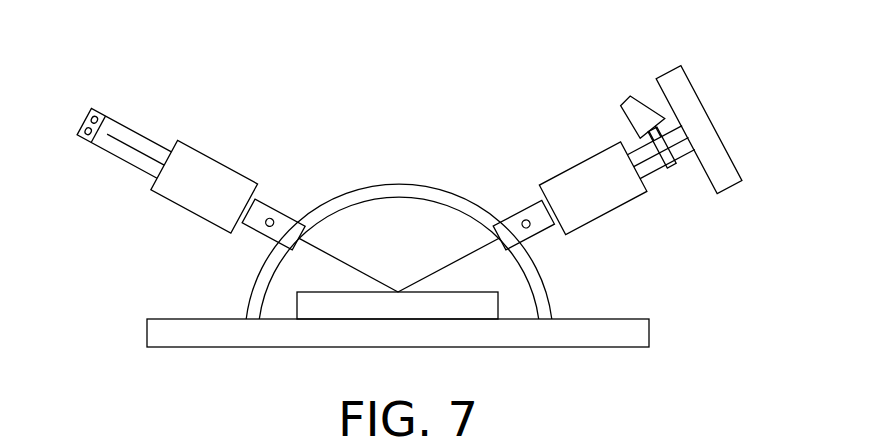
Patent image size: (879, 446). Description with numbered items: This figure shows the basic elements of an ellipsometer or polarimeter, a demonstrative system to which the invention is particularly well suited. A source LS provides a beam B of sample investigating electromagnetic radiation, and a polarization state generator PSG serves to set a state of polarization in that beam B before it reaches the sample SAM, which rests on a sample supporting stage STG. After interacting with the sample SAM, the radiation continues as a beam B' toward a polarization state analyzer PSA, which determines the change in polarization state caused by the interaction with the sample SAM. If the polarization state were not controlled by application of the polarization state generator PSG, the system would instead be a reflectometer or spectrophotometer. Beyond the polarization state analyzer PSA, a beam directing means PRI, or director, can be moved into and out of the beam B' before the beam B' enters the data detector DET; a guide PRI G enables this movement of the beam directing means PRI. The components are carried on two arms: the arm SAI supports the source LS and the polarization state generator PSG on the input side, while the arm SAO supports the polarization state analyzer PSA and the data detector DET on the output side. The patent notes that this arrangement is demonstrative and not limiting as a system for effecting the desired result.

The source LS is at (103, 105).
The beam B is at (252, 192).
The polarization state generator PSG is at (200, 140).
The arm SAI is at (273, 178).
The sample SAM is at (426, 315).
The sample supporting stage STG is at (426, 345).
The polarization state analyzer PSA is at (560, 162).
The beam B' is at (543, 208).
The beam directing means PRI is at (652, 112).
The data detector DET is at (699, 130).
The guide PRI G is at (677, 177).
The arm SAO is at (657, 182).